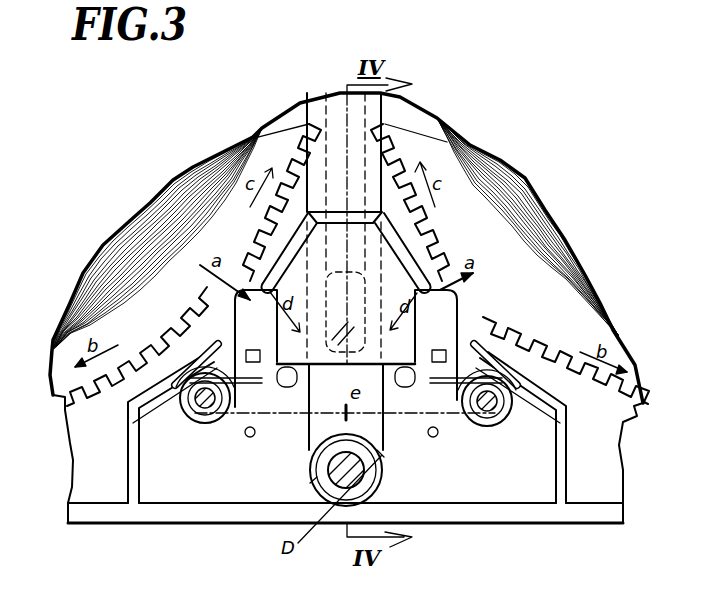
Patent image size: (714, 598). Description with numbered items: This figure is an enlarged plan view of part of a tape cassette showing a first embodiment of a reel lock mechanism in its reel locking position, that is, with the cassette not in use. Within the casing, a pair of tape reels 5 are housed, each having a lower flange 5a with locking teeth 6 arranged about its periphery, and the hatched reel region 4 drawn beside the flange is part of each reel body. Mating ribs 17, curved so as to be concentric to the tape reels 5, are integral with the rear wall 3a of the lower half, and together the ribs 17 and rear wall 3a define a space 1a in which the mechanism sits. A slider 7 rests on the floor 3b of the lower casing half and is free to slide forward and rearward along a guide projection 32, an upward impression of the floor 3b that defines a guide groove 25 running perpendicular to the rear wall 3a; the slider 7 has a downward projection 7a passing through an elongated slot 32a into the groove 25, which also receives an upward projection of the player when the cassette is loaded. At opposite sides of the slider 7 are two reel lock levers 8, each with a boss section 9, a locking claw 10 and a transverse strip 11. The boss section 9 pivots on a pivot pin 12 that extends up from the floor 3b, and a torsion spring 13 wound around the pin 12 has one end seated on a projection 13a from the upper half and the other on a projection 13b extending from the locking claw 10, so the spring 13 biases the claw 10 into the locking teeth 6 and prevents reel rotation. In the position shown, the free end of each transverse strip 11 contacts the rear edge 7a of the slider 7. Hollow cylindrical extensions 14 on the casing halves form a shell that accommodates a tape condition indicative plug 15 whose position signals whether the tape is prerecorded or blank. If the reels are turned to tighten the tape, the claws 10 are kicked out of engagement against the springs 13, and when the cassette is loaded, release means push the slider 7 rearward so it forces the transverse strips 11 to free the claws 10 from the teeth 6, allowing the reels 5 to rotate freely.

The space 1a is at (513, 500).
The rear wall 3a is at (222, 517).
The floor 3b is at (170, 493).
The shell wall 4 is at (150, 222).
The tape reel 5 is at (180, 168).
The lower flange 5a is at (415, 140).
The locking teeth 6 is at (282, 178).
The slider 7 is at (395, 282).
The downward projection 7a is at (297, 420).
The reel lock lever 8 is at (257, 262).
The boss section 9 is at (193, 405).
The locking claw 10 is at (232, 295).
The transverse strip 11 is at (320, 350).
The pivot pin 12 is at (203, 408).
The torsion spring 13 is at (196, 343).
The projection 13a is at (245, 437).
The projection 13b is at (230, 310).
The hollow cylindrical extension 14 is at (380, 480).
The tape condition indicative plug 15 is at (330, 460).
The rib 17 is at (130, 420).
The guide groove 25 is at (385, 118).
The guide projection 32 is at (320, 104).
The elongated slot 32a is at (332, 380).